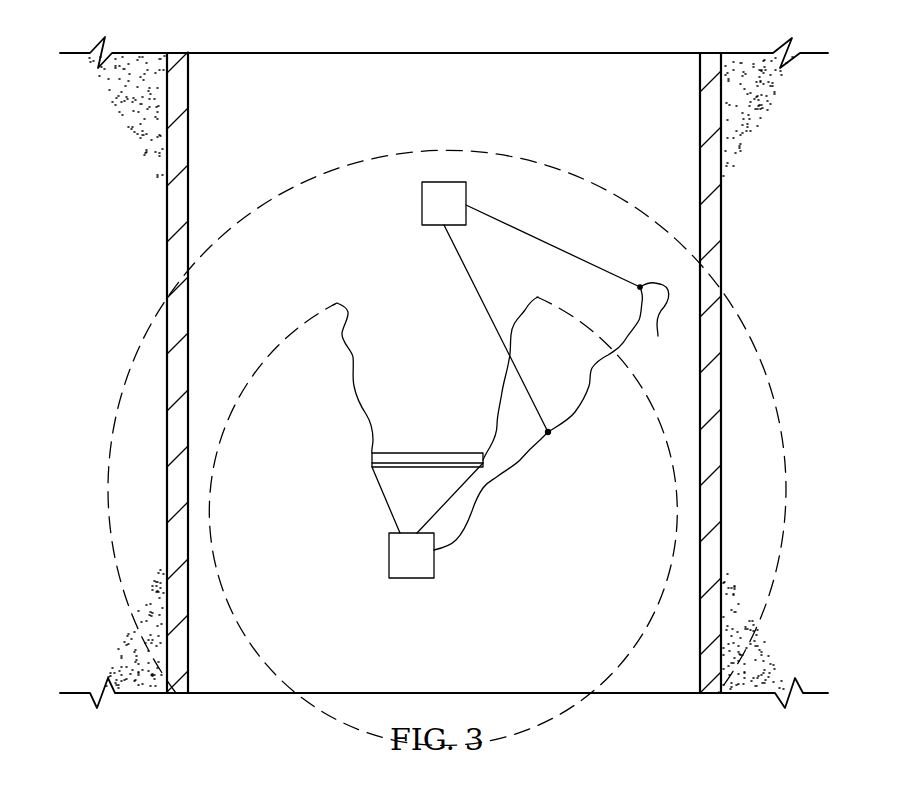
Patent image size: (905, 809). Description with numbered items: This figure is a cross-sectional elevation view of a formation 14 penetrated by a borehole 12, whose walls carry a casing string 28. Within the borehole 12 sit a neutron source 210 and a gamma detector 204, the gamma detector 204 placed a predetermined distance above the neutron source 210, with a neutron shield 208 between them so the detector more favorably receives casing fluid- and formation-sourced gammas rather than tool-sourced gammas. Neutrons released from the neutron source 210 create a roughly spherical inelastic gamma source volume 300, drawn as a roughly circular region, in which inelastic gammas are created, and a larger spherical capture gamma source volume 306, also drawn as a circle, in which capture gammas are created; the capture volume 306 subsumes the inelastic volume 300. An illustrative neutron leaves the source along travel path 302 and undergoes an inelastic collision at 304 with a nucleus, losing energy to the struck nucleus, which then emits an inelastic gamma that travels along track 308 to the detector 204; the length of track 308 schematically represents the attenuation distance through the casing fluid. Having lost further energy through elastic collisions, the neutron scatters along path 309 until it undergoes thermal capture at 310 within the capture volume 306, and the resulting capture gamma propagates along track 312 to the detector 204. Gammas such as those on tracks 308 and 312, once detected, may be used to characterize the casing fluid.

The borehole 12 is at (316, 77).
The formation 14 is at (128, 263).
The casing string 28 is at (188, 126).
The gamma detector 204 is at (422, 194).
The neutron shield 208 is at (428, 452).
The neutron source 210 is at (389, 566).
The inelastic gamma source volume 300 is at (292, 317).
The neutron travel path 302 is at (482, 488).
The inelastic collision 304 is at (550, 432).
The capture gamma source volume 306 is at (350, 158).
The track 308 is at (458, 269).
The path 309 is at (592, 385).
The capture collision 310 is at (661, 323).
The track 312 is at (553, 241).